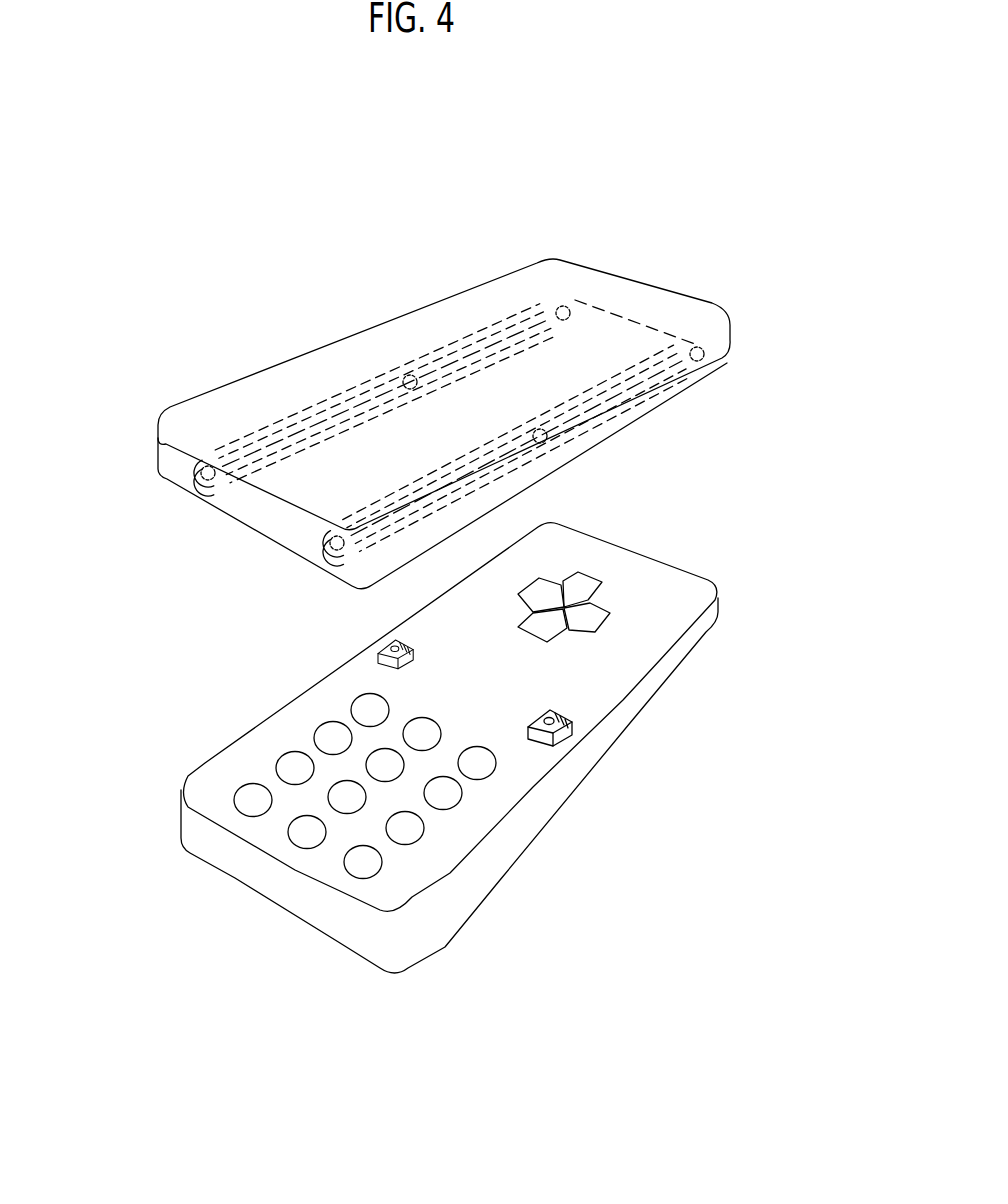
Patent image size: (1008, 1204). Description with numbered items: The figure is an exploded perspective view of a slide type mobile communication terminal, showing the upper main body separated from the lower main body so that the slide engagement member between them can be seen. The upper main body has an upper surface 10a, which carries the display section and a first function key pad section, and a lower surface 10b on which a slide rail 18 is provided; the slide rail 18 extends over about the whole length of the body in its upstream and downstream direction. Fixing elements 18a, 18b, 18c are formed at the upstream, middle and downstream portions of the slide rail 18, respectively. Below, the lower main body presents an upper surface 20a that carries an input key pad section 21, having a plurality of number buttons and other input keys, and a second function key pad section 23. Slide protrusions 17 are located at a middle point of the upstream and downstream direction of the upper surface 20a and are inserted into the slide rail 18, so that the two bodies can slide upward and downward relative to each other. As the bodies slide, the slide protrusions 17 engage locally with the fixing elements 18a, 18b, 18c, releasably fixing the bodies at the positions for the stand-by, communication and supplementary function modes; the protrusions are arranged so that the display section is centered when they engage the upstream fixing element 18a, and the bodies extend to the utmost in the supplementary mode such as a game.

The upper surface 10a is at (690, 292).
The lower surface 10b is at (700, 340).
The slide protrusions 17 is at (560, 737).
The slide rail 18 is at (210, 507).
The upstream fixing element 18a is at (575, 302).
The middle fixing element 18b is at (422, 374).
The downstream fixing element 18c is at (224, 459).
The upper surface of the lower main body 20a is at (720, 588).
The input key pad section 21 is at (425, 835).
The second function key pad section 23 is at (590, 580).